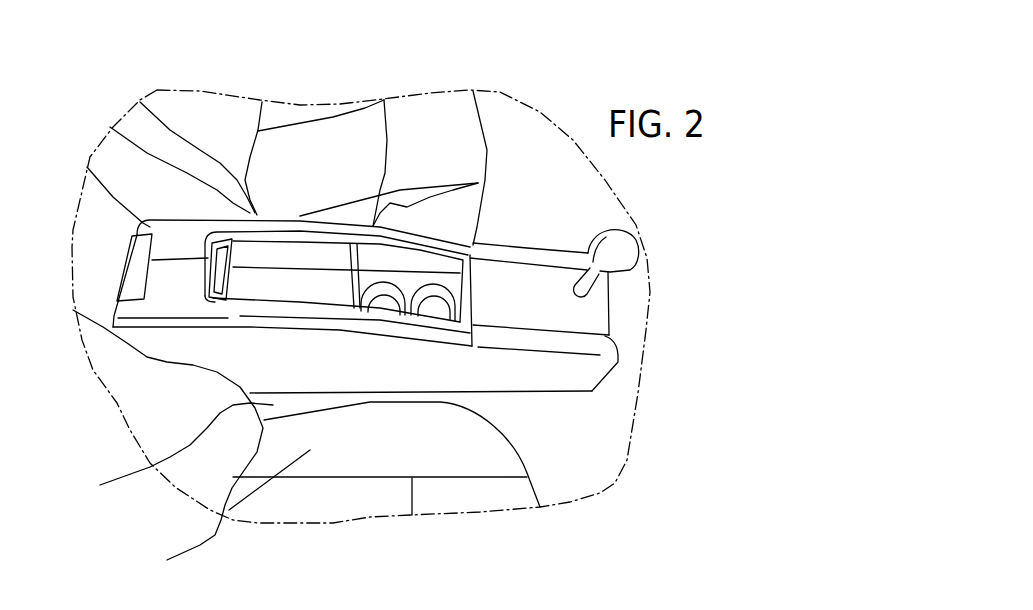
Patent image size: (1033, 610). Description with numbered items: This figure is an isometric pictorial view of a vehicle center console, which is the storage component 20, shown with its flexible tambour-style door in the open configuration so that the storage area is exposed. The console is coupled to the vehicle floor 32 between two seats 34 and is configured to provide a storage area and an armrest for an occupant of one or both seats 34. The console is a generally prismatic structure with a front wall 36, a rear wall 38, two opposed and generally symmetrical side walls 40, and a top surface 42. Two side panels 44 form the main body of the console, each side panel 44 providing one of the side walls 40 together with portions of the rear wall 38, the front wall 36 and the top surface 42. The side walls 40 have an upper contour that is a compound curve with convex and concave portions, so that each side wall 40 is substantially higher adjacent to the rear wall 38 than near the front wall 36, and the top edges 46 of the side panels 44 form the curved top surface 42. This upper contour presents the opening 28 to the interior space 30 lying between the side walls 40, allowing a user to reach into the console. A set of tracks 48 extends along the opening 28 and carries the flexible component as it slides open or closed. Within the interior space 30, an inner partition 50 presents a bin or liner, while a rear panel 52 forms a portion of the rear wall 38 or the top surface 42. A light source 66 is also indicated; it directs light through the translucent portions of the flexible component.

The storage component 20 is at (238, 325).
The opening 28 is at (267, 237).
The interior space 30 is at (336, 294).
The vehicle floor 32 is at (168, 453).
The seats 34 is at (413, 125).
The front wall 36 is at (610, 303).
The rear wall 38 is at (110, 312).
The side walls 40 is at (403, 193).
The top surface 42 is at (180, 230).
The side panels 44 is at (593, 350).
The top edges 46 is at (520, 258).
The tracks 48 is at (320, 243).
The inner partition 50 is at (352, 288).
The rear panel 52 is at (135, 260).
The light source 66 is at (294, 283).